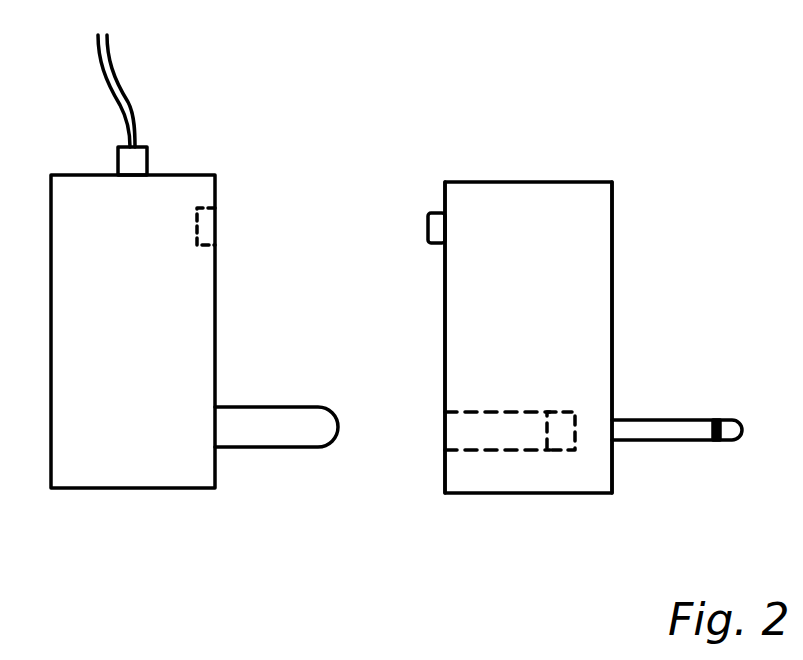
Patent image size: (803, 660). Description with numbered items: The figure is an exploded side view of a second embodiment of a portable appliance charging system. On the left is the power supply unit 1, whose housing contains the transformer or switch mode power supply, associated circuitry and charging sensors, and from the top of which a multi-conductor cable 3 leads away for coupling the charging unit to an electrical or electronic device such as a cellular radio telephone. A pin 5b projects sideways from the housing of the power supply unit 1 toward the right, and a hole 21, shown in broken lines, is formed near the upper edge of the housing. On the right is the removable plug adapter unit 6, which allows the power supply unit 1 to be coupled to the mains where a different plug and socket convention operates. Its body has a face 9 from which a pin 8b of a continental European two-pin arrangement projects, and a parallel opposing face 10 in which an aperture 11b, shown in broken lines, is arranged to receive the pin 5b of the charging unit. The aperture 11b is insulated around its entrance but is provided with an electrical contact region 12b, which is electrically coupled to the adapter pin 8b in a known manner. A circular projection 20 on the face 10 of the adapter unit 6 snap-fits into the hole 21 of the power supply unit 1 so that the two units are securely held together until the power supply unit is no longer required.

The power supply unit 1 is at (115, 515).
The multi-conductor cable 3 is at (110, 63).
The hole 21 is at (205, 223).
The pin 5b is at (297, 432).
The removable plug adapter unit 6 is at (575, 527).
The face 9 is at (612, 232).
The parallel opposing face 10 is at (445, 323).
The circular projection 20 is at (427, 227).
The aperture 11b is at (460, 428).
The electrical contact region 12b is at (533, 432).
The pin 8b is at (657, 432).